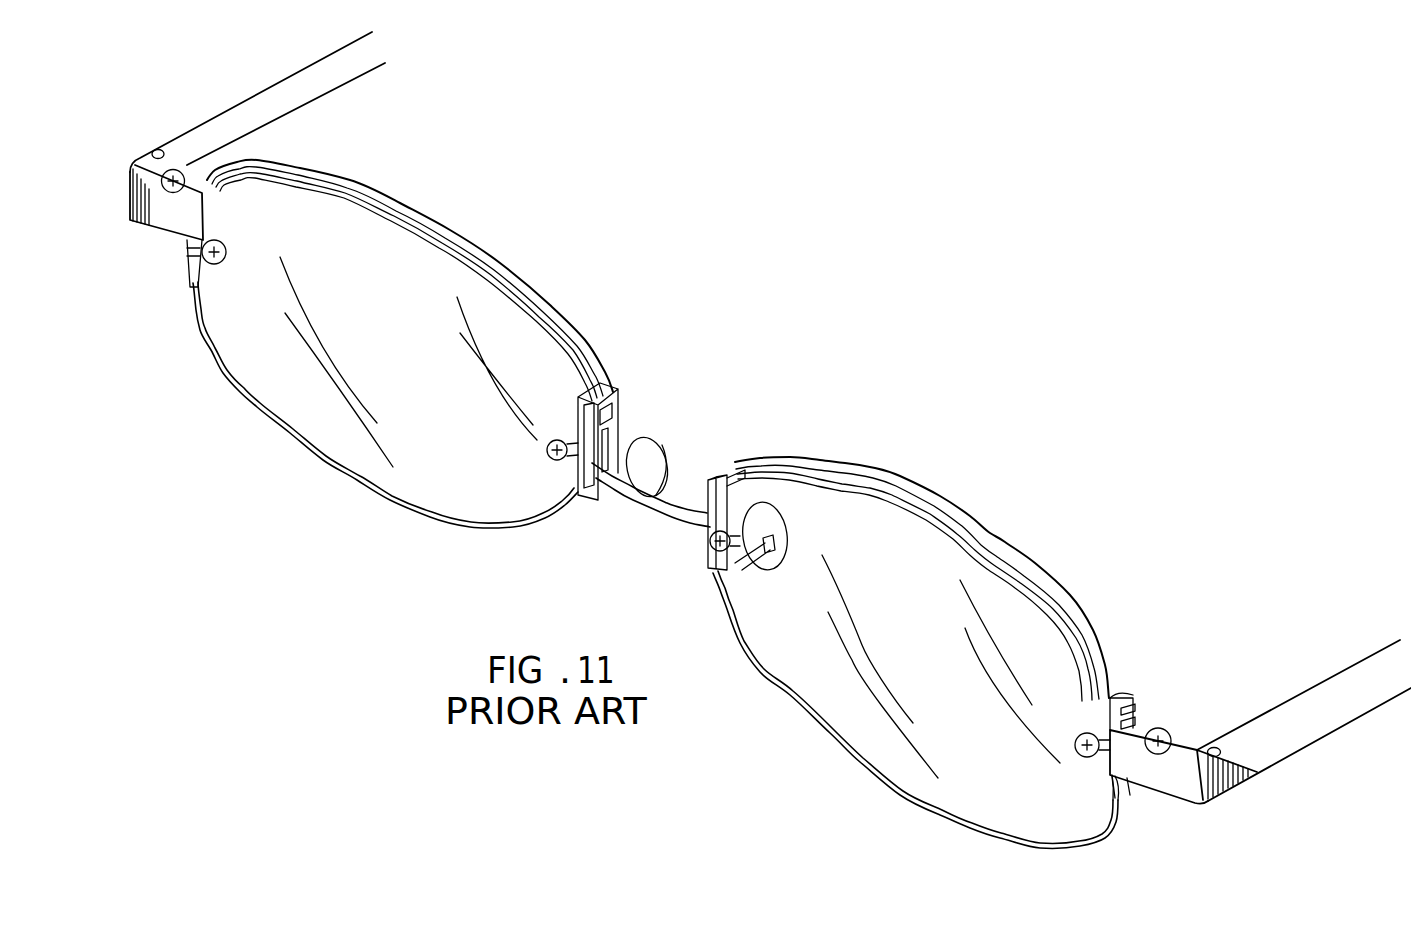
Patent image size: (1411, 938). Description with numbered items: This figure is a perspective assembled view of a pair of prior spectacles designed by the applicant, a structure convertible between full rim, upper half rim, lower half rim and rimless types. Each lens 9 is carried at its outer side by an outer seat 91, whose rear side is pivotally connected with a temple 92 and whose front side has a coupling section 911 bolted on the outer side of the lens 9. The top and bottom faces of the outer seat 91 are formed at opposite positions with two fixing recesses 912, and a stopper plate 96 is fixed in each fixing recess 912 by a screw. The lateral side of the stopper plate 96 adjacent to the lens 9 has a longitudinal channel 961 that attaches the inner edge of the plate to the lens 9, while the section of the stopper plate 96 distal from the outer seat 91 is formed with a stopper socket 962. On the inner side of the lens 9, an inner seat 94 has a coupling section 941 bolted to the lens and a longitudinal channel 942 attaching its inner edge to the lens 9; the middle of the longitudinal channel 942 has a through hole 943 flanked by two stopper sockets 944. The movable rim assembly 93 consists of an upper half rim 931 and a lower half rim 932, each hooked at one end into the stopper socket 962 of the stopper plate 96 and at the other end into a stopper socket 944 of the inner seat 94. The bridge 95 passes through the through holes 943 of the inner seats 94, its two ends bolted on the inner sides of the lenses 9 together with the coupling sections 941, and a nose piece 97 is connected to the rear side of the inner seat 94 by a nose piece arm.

The lens 9 is at (263, 397).
The outer seat 91 is at (113, 197).
The coupling section 911 is at (187, 250).
The fixing recess 912 is at (1173, 740).
The temple 92 is at (293, 80).
The movable rim assembly 93 is at (463, 233).
The upper half rim 931 is at (553, 320).
The lower half rim 932 is at (203, 343).
The inner seat 94 is at (623, 423).
The coupling section 941 is at (577, 470).
The longitudinal channel 942 is at (593, 377).
The through hole 943 is at (603, 433).
The stopper socket 944 is at (618, 407).
The bridge 95 is at (640, 503).
The stopper plate 96 is at (198, 190).
The longitudinal channel 961 is at (1125, 697).
The stopper socket 962 is at (1140, 720).
The nose piece 97 is at (773, 528).